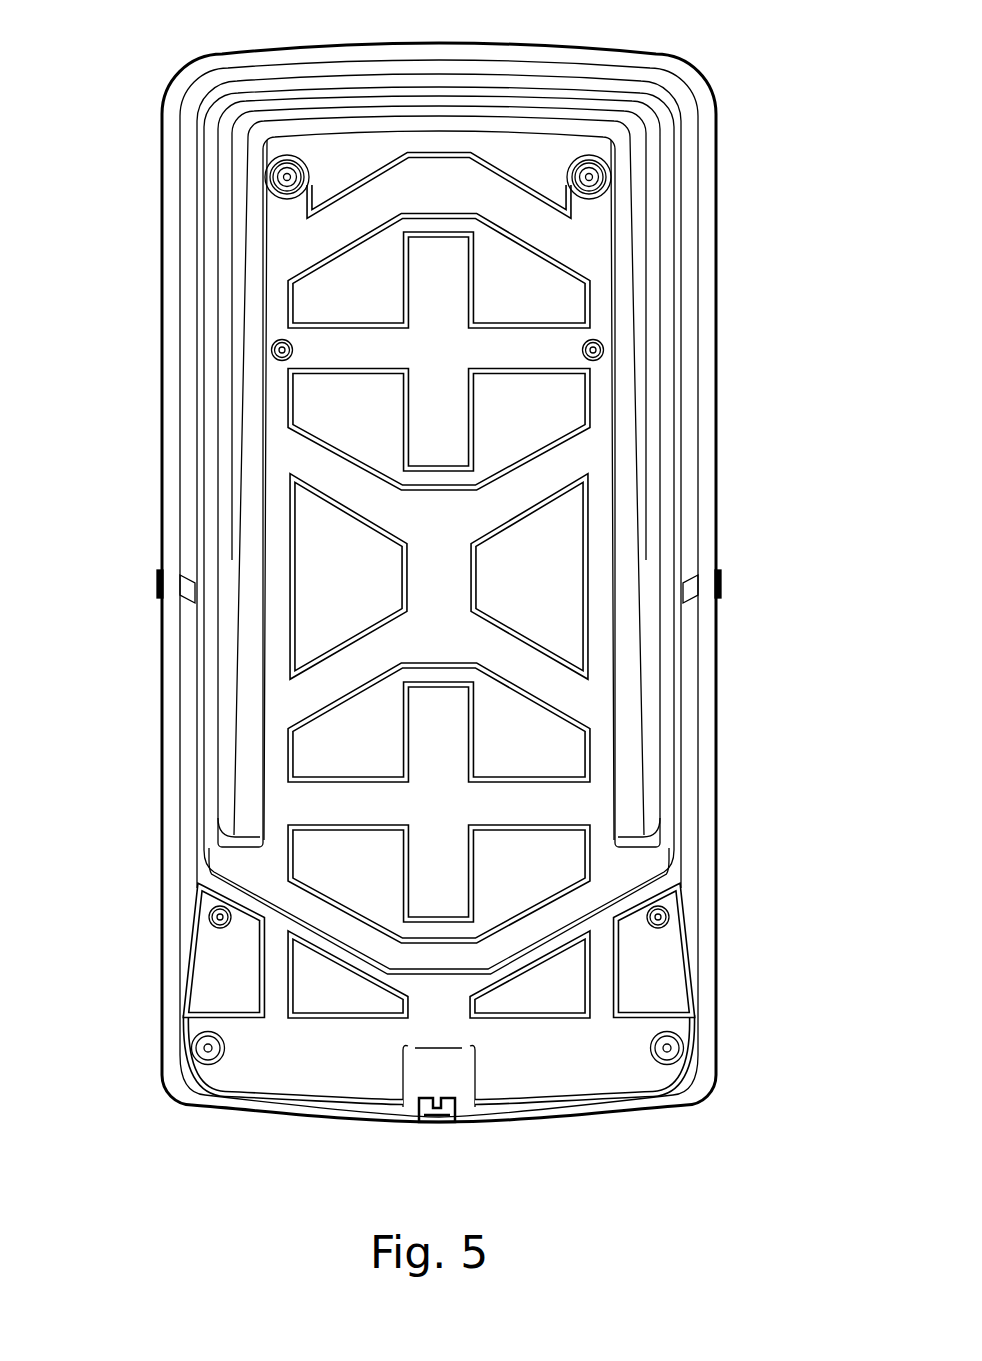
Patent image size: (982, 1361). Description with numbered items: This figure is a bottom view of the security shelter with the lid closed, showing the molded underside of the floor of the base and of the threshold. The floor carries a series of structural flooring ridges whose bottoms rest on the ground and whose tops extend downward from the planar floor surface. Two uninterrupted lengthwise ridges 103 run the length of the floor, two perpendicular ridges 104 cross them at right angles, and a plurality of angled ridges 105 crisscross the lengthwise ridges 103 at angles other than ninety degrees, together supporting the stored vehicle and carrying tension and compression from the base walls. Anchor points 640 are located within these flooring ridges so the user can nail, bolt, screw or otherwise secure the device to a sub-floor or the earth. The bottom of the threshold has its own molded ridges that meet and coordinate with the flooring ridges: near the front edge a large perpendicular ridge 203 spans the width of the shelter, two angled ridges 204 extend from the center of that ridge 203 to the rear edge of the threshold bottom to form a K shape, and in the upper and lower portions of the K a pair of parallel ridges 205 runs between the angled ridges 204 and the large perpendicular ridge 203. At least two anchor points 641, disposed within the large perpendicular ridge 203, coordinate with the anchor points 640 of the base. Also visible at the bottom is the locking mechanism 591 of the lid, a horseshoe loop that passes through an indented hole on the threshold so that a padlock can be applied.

The lengthwise ridges 103 is at (270, 592).
The perpendicular ridges 104 is at (548, 352).
The angled ridges 105 is at (505, 200).
The large perpendicular ridge 203 is at (620, 1067).
The angled ridges 204 is at (290, 925).
The pair of ridges 205 is at (275, 1000).
The locking mechanism 591 is at (428, 1124).
The anchor points 640 is at (598, 177).
The anchor points 641 is at (208, 1050).